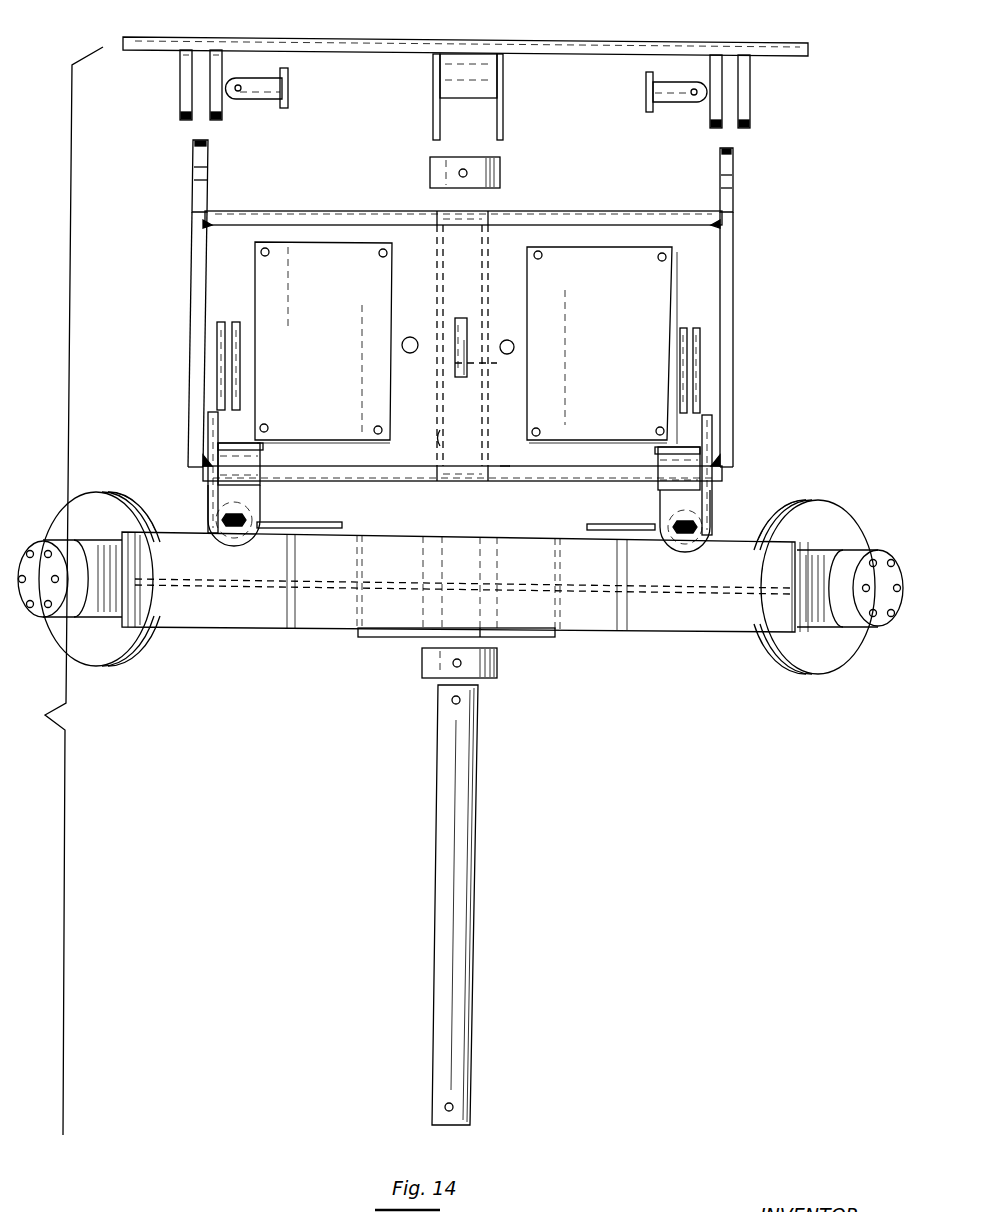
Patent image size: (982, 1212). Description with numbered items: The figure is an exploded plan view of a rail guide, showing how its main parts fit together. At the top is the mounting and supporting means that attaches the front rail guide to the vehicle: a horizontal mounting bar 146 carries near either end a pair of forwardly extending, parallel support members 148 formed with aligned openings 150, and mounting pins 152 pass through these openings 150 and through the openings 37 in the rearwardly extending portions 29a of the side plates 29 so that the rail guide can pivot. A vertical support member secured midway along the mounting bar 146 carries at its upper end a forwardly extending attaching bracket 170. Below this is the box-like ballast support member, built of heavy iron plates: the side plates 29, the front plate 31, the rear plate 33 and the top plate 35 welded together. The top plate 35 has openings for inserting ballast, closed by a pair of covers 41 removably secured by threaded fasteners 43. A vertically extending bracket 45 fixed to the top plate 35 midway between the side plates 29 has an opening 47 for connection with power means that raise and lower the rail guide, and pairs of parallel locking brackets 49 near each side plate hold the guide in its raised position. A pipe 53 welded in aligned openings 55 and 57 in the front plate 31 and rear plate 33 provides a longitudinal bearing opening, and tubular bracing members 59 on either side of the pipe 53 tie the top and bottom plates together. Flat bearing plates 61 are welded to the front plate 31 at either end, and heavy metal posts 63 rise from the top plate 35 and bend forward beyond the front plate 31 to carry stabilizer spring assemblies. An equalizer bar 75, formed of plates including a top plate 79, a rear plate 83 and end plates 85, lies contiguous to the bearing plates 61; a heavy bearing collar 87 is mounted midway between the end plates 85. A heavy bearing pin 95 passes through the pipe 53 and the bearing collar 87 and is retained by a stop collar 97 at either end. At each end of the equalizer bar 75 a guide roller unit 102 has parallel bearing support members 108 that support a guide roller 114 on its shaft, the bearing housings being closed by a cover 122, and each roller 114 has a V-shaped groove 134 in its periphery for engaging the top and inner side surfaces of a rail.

The horizontal mounting bar 146 is at (599, 46).
The aligned openings 150 is at (190, 70).
The support members 148 is at (188, 120).
The mounting pins 152 is at (288, 88).
The attaching bracket 170 is at (503, 113).
The stop collar 97 is at (500, 170).
The rearwardly extending portions 29a is at (193, 151).
The openings 37 is at (208, 170).
The side plates 29 is at (192, 284).
The rear plate 33 is at (579, 218).
The front plate 31 is at (393, 472).
The opening 57 is at (442, 246).
The opening 55 is at (451, 487).
The pipe 53 is at (440, 430).
The covers 41 is at (466, 343).
The threaded fasteners 43 is at (378, 258).
The locking brackets 49 is at (238, 322).
The vertically extending bracket 45 is at (460, 318).
The opening 47 is at (470, 364).
The tubular bracing members 59 is at (410, 337).
The metal post 63 is at (210, 432).
The bearing plate 61 is at (308, 524).
The rear plate 83 is at (372, 526).
The equalizer bar 75 is at (244, 637).
The bearing collar 87 is at (430, 573).
The end plates 85 is at (128, 543).
The top plate 79 is at (576, 630).
The guide roller 114 is at (94, 490).
The V-shaped groove 134 is at (776, 510).
The bearing support members 108 is at (90, 618).
The guide roller unit 102 is at (70, 546).
The cover 122 is at (35, 610).
The top plate 35 is at (504, 456).
The bearing pin 95 is at (440, 787).